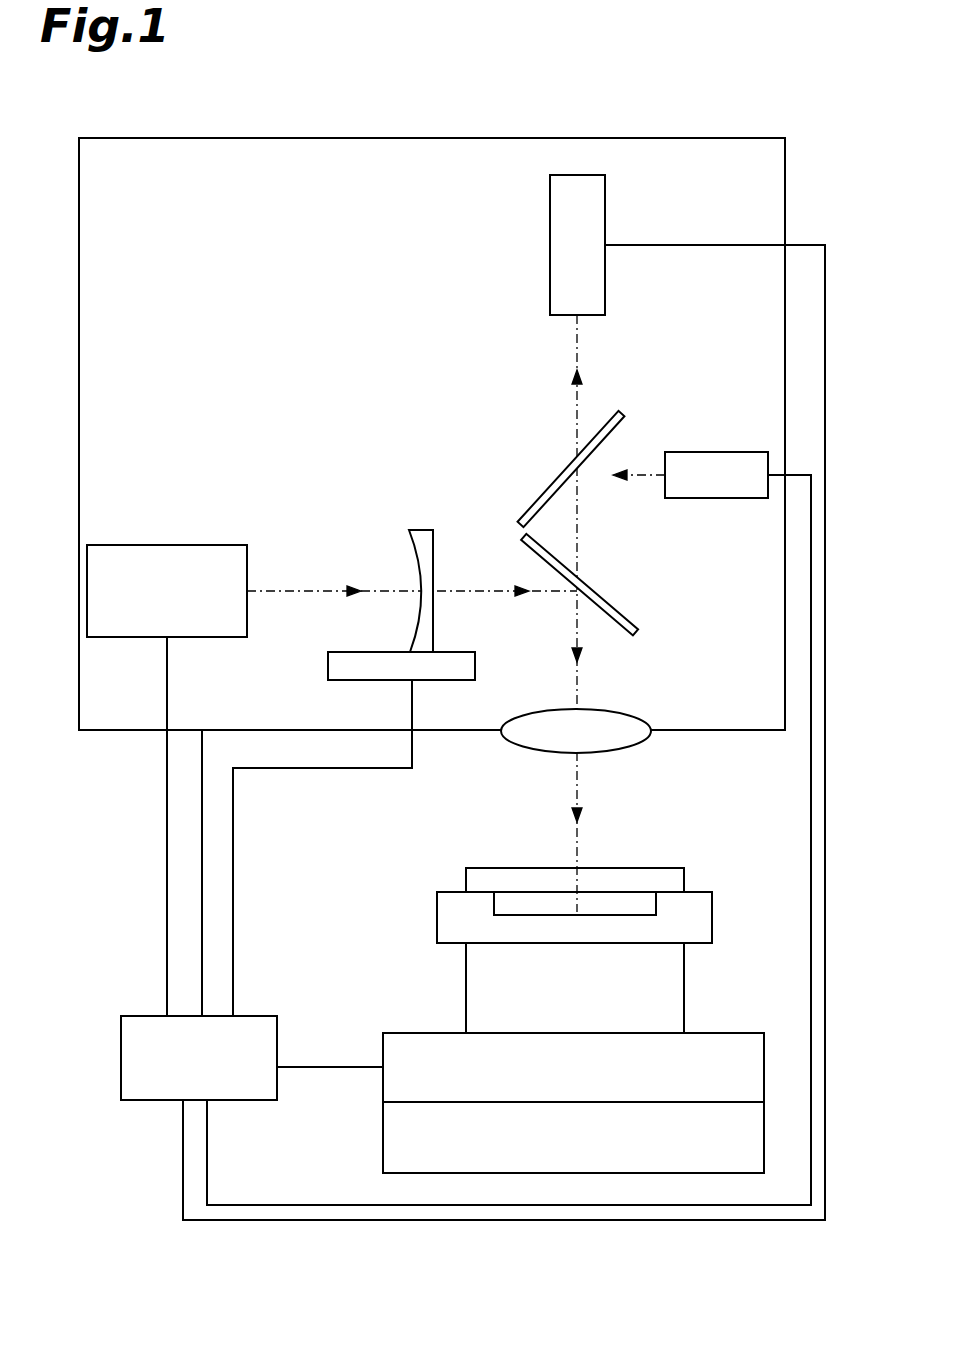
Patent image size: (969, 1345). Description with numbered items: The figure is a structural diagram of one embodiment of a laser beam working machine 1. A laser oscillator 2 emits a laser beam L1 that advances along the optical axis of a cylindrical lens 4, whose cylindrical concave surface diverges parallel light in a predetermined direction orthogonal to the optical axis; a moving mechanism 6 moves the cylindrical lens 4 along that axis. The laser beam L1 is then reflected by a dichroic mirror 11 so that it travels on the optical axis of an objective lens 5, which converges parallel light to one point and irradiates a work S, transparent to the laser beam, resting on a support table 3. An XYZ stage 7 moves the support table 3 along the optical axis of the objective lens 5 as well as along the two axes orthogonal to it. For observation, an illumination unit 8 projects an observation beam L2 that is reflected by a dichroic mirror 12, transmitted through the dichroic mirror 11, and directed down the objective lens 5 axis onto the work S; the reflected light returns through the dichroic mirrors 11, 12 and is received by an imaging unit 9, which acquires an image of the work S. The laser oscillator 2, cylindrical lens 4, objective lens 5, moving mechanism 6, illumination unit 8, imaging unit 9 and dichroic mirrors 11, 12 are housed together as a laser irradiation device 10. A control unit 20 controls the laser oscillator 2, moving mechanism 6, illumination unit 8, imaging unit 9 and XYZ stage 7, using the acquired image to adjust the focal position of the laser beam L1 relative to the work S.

The laser beam working machine 1 is at (693, 121).
The laser oscillator 2 is at (167, 545).
The support table 3 is at (712, 912).
The cylindrical lens 4 is at (421, 530).
The objective lens 5 is at (628, 712).
The moving mechanism 6 is at (328, 657).
The XYZ stage 7 is at (770, 943).
The illumination unit 8 is at (715, 452).
The imaging unit 9 is at (605, 210).
The laser irradiation device 10 is at (232, 137).
The dichroic mirror 11 is at (625, 615).
The dichroic mirror 12 is at (539, 495).
The control unit 20 is at (140, 1016).
The work S is at (628, 868).
The laser beam L1 is at (282, 591).
The observation beam L2 is at (650, 475).